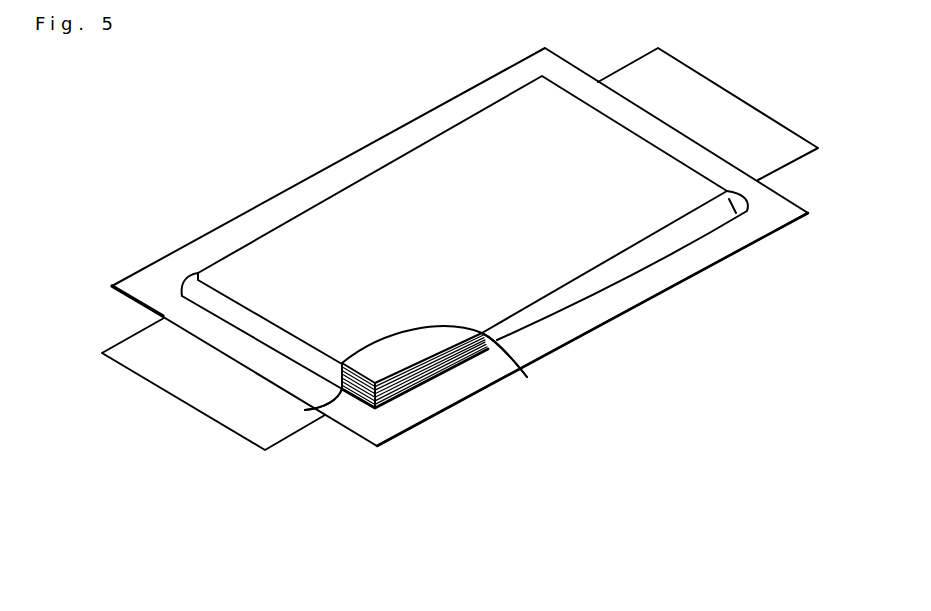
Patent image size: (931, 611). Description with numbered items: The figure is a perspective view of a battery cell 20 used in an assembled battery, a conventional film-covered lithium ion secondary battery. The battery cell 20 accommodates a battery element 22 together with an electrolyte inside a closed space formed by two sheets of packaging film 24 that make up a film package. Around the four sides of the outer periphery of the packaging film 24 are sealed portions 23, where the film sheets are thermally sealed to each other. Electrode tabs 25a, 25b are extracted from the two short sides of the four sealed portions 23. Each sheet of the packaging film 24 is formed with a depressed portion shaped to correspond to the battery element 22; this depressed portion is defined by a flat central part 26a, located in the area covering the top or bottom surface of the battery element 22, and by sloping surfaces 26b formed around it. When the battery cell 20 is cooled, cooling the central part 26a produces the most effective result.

The battery cell 20 is at (709, 547).
The battery element 22 is at (432, 368).
The sealed portions 23 is at (170, 270).
The packaging film 24 is at (438, 180).
The electrode tab 25a is at (215, 403).
The electrode tab 25b is at (727, 112).
The flat central part 26a is at (438, 252).
The sloping surfaces 26b is at (290, 351).